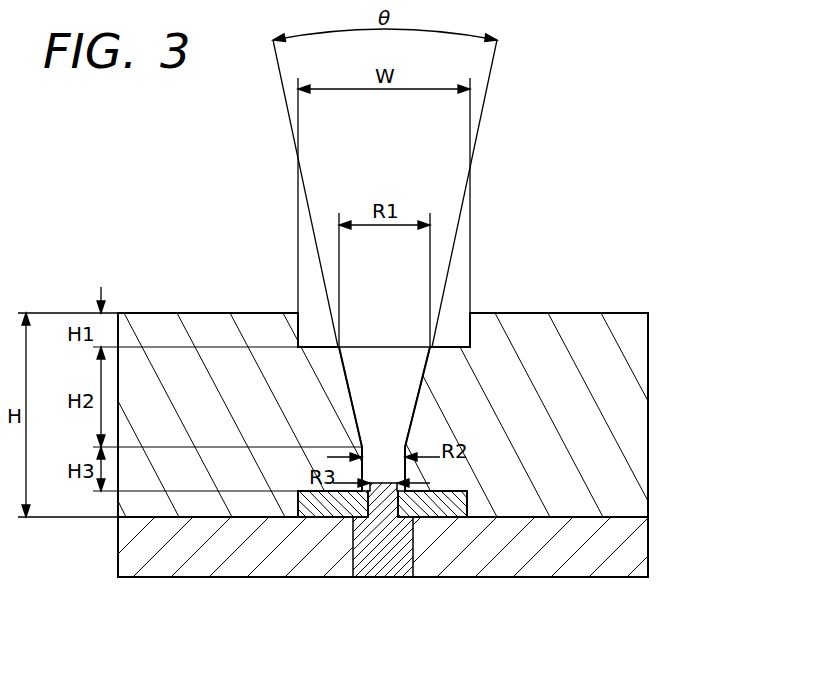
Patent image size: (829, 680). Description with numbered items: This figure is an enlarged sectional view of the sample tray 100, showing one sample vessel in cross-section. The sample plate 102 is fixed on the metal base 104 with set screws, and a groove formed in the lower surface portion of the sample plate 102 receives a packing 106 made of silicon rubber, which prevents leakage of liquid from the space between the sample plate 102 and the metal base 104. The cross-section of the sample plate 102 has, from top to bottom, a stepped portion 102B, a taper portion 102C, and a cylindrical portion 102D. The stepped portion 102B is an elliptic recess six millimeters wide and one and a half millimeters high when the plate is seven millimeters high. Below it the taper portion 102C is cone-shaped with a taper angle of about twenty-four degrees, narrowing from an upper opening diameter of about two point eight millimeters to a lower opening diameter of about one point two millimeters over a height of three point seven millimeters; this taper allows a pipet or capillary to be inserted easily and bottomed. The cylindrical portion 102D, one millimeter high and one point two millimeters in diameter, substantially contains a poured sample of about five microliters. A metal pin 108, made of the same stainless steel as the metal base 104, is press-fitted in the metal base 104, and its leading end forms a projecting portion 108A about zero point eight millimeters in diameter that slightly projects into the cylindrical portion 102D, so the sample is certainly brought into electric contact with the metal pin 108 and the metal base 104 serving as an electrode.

The sample tray 100 is at (148, 240).
The sample plate 102 is at (632, 353).
The stepped portion 102B is at (471, 329).
The taper portion 102C is at (417, 400).
The cylindrical portion 102D is at (405, 474).
The metal base 104 is at (638, 548).
The packing 106 is at (327, 513).
The metal pin 108 is at (390, 566).
The projecting portion 108A is at (401, 506).